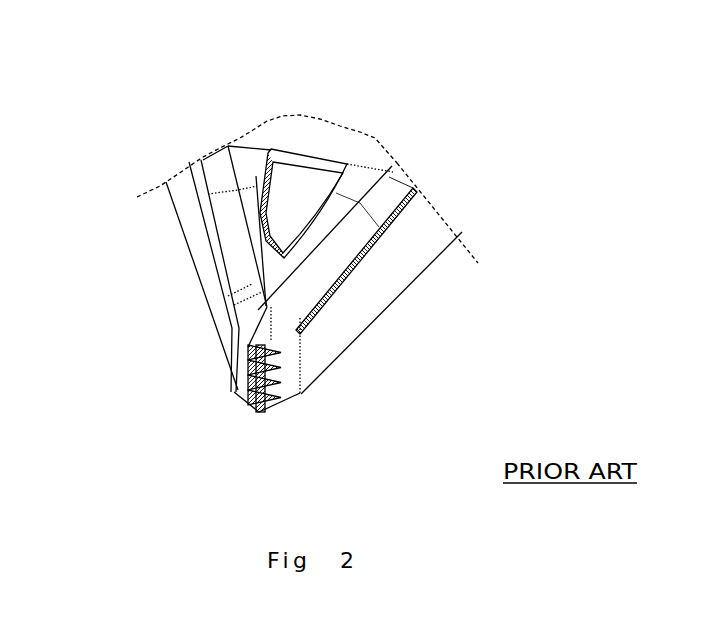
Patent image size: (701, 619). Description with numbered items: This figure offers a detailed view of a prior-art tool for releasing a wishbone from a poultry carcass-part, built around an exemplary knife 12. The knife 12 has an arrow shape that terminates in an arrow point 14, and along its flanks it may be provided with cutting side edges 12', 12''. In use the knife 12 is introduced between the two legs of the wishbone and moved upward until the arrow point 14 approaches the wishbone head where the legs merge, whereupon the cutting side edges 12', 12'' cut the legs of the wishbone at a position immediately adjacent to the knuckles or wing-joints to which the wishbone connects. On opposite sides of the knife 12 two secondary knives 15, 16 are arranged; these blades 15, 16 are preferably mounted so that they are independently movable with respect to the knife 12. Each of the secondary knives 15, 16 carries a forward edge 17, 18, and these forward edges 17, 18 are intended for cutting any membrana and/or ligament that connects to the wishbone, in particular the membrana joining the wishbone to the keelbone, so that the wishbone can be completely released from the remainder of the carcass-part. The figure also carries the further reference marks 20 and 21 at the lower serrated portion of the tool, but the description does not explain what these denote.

The knife 12 is at (267, 109).
The cutting side edge 12'' is at (185, 117).
The cutting side edge 12' is at (429, 217).
The arrow point 14 is at (360, 343).
The secondary knife 15 is at (427, 278).
The secondary knife 16 is at (159, 253).
The forward edge 17 is at (183, 293).
The forward edge 18 is at (375, 370).
The serrations 20 is at (207, 404).
The bottom edge 21 is at (300, 427).